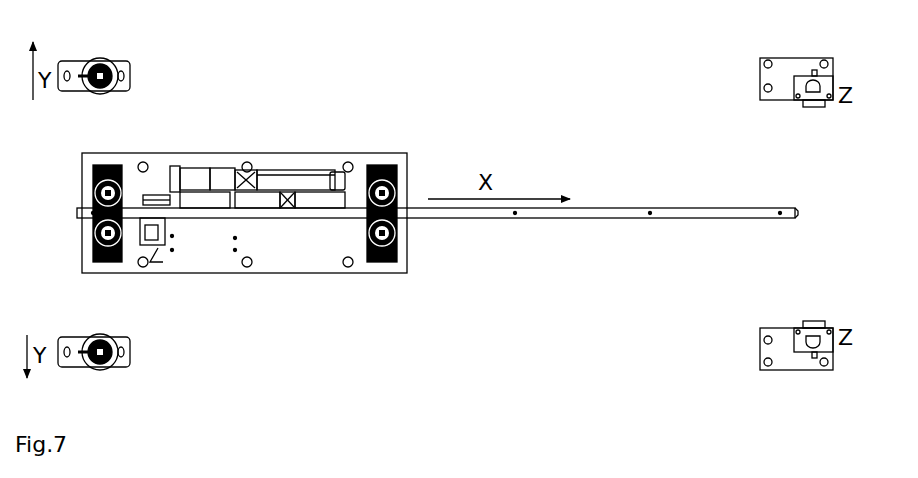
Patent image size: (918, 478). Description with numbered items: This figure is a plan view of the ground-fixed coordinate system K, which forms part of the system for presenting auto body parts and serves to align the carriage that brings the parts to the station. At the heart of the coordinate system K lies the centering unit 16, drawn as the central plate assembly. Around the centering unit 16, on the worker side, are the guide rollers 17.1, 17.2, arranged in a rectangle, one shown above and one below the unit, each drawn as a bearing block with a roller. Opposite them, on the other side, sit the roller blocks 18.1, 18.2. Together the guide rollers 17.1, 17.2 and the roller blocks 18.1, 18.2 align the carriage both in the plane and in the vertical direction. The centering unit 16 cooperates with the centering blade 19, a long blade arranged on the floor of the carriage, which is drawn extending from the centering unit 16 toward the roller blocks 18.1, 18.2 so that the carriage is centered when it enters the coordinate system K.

The centering unit 16 is at (244, 182).
The worker-side guide roller 17.1 is at (121, 52).
The worker-side guide roller 17.2 is at (124, 371).
The roller block 18.1 is at (774, 56).
The roller block 18.2 is at (776, 369).
The centering blade 19 is at (437, 182).
The coordinate system K is at (419, 47).